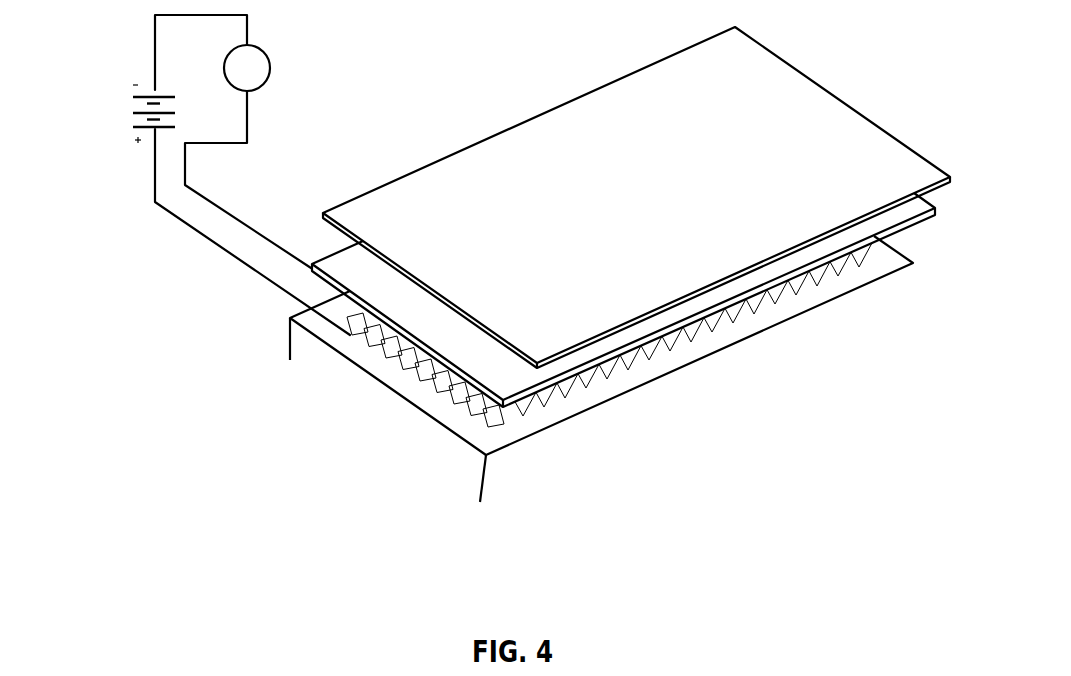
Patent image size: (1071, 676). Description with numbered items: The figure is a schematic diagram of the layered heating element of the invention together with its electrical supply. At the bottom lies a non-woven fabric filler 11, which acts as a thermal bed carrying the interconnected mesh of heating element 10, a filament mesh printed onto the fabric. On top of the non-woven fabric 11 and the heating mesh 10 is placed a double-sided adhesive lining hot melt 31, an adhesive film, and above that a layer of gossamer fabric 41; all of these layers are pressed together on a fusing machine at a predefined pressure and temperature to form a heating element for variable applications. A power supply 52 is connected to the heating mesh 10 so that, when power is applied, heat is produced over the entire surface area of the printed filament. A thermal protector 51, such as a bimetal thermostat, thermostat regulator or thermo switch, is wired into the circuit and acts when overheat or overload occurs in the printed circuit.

The interconnected mesh of heating element 10 is at (493, 420).
The non-woven fabric filler 11 is at (733, 372).
The double-sided adhesive lining hot melt 31 is at (923, 217).
The layer of gossamer fabric 41 is at (893, 155).
The thermal protector 51 is at (270, 68).
The power supply 52 is at (120, 117).